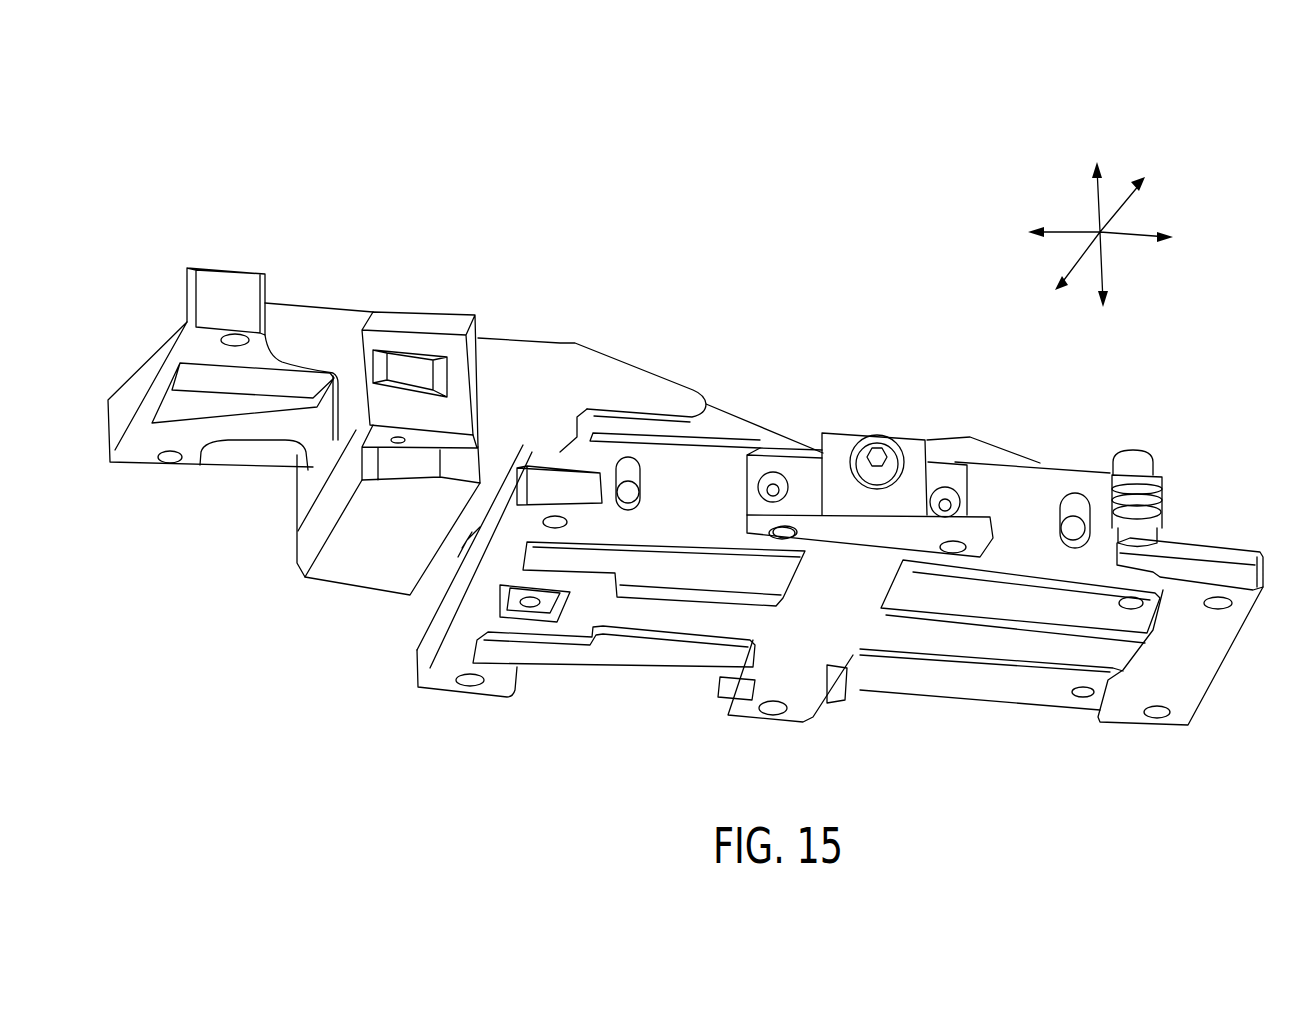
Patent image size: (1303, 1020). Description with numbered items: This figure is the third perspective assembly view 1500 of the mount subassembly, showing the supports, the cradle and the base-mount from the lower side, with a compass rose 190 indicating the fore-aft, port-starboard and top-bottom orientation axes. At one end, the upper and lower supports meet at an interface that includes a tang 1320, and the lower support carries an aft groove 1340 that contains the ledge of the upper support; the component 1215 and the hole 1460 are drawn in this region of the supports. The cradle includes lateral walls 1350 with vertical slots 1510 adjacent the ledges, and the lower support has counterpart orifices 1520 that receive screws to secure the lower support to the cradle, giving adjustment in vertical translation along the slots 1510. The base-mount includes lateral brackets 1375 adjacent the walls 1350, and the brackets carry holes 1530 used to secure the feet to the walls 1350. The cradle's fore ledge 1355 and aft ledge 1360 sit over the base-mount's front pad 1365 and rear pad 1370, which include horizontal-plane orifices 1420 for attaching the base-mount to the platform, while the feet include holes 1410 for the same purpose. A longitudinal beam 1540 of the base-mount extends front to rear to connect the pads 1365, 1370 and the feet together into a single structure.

The compass rose 190 is at (1136, 126).
The third perspective assembly view 1500 is at (490, 196).
The bracket 1215 is at (160, 305).
The mounting hole 1460 is at (172, 462).
The aft groove 1340 is at (424, 313).
The tang 1320 is at (296, 503).
The lateral walls 1350 is at (518, 392).
The vertical slots 1510 is at (629, 465).
The counterpart orifices 1520 is at (641, 490).
The holes 1530 is at (774, 487).
The lateral brackets 1375 is at (933, 468).
The aft ledge 1360 is at (430, 624).
The rear pad 1370 is at (470, 686).
The longitudinal beam 1540 is at (677, 612).
The holes 1410 is at (952, 553).
The fore ledge 1355 is at (1230, 555).
The front pad 1365 is at (1225, 650).
The horizontal-plane orifices 1420 is at (1168, 710).